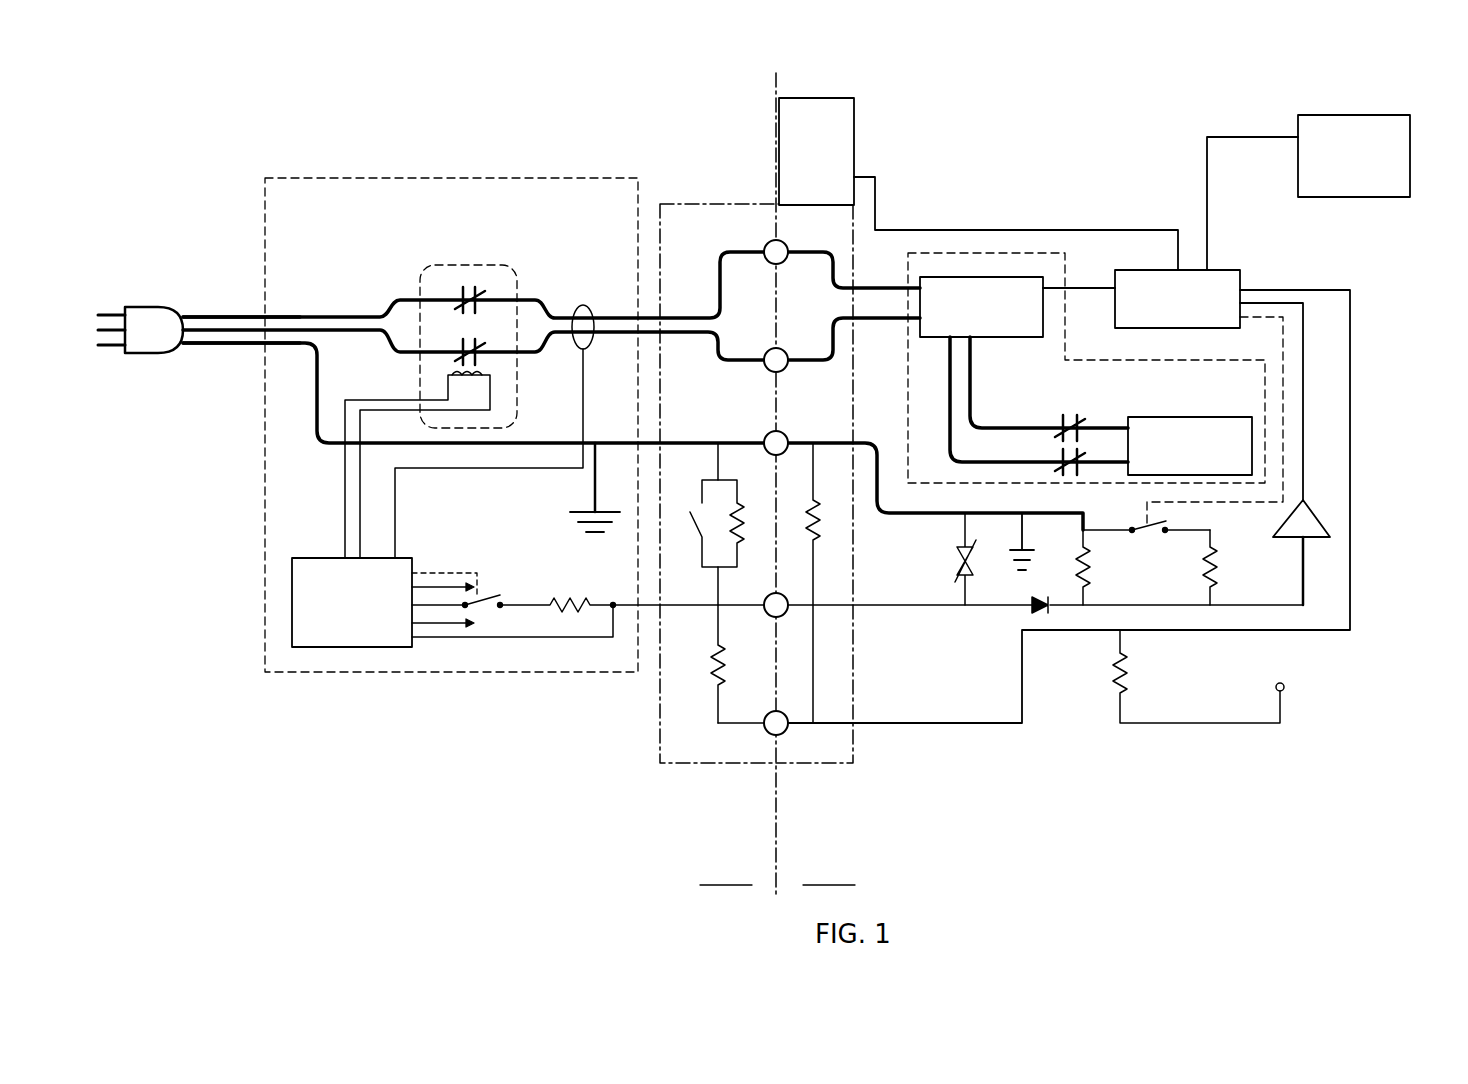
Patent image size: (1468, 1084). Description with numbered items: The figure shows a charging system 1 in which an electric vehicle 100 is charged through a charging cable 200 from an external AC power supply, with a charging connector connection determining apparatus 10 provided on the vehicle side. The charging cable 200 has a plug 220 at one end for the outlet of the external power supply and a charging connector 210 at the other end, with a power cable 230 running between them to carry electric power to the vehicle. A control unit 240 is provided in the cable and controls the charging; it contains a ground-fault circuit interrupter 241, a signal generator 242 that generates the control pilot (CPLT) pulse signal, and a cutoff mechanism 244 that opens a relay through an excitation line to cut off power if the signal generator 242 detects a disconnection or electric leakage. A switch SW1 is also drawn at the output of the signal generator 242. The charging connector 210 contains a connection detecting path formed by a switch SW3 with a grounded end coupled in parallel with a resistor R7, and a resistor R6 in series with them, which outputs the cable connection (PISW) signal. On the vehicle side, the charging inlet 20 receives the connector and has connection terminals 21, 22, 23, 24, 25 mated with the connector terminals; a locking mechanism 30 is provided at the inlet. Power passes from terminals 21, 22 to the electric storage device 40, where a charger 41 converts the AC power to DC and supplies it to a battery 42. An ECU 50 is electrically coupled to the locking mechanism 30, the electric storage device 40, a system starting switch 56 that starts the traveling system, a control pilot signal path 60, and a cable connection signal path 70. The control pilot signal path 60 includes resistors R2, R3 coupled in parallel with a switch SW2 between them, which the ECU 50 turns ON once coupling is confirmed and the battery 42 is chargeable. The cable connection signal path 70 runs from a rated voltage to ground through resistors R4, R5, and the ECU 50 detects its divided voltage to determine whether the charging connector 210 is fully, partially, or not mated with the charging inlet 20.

The charging system 1 is at (676, 124).
The charging connector connection determining apparatus 10 is at (955, 125).
The charging inlet 20 is at (853, 765).
The connection terminal 21 is at (782, 265).
The connection terminal 22 is at (787, 368).
The connection terminal 23 is at (788, 437).
The connection terminal 24 is at (782, 618).
The connection terminal 25 is at (787, 733).
The locking mechanism 30 is at (854, 140).
The electric storage device 40 is at (1015, 253).
The charger 41 is at (1005, 340).
The battery 42 is at (1188, 417).
The electronic control unit (ECU) 50 is at (1213, 268).
The system starting switch 56 is at (1370, 115).
The control pilot signal path 60 is at (1305, 568).
The cable connection signal path 70 is at (1352, 465).
The electric vehicle 100 is at (829, 870).
The charging cable 200 is at (726, 870).
The charging connector 210 is at (658, 742).
The plug 220 is at (150, 307).
The power cable 230 is at (210, 317).
The control unit 240 is at (362, 178).
The ground-fault circuit interrupter 241 is at (583, 305).
The signal generator 242 is at (375, 647).
The cutoff mechanism 244 is at (468, 265).
The switch SW1 is at (514, 591).
The switch SW2 is at (1146, 511).
The switch SW3 is at (683, 524).
The resistor R2 is at (1232, 567).
The resistor R3 is at (1104, 567).
The resistor R4 is at (1204, 676).
The resistor R5 is at (829, 583).
The resistor R6 is at (696, 664).
The resistor R7 is at (744, 523).